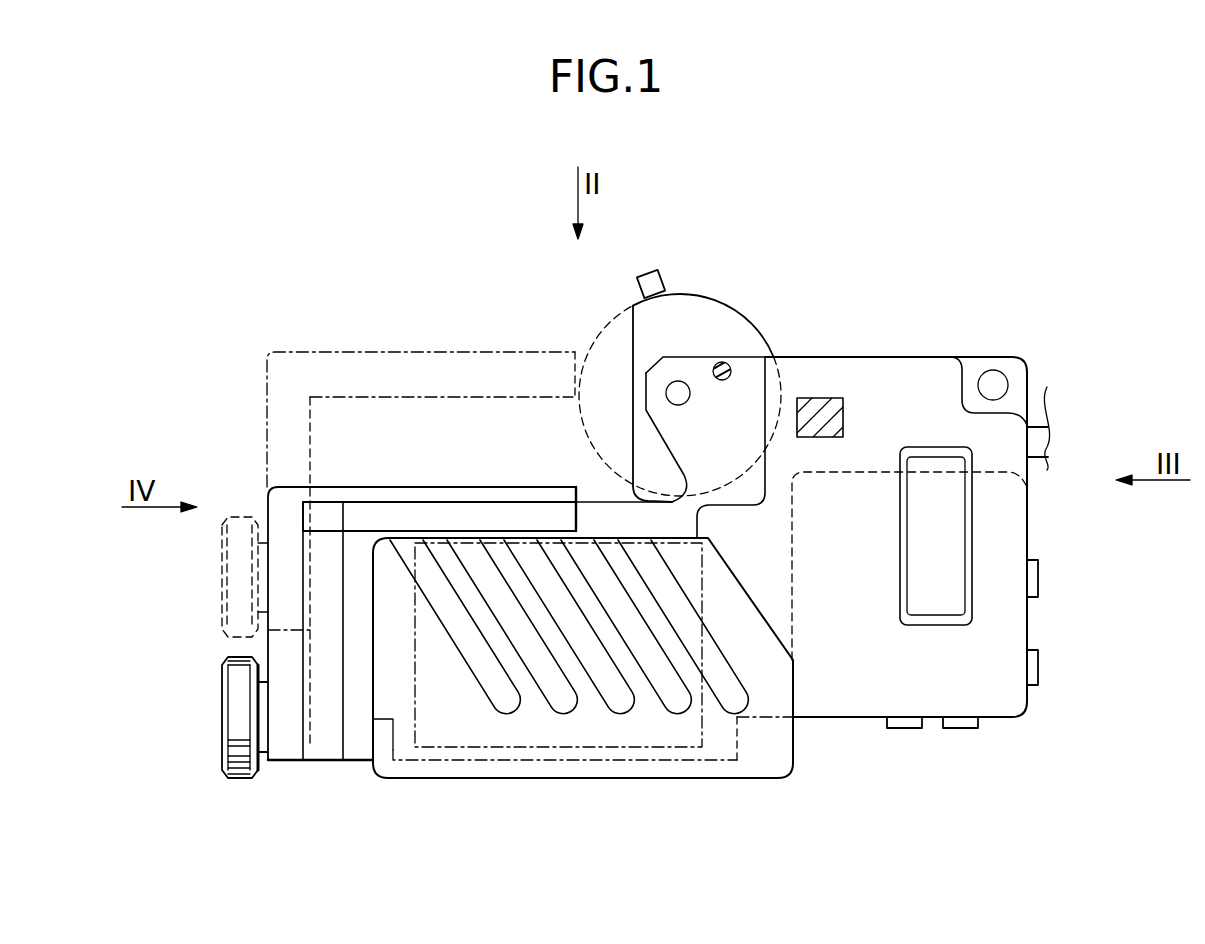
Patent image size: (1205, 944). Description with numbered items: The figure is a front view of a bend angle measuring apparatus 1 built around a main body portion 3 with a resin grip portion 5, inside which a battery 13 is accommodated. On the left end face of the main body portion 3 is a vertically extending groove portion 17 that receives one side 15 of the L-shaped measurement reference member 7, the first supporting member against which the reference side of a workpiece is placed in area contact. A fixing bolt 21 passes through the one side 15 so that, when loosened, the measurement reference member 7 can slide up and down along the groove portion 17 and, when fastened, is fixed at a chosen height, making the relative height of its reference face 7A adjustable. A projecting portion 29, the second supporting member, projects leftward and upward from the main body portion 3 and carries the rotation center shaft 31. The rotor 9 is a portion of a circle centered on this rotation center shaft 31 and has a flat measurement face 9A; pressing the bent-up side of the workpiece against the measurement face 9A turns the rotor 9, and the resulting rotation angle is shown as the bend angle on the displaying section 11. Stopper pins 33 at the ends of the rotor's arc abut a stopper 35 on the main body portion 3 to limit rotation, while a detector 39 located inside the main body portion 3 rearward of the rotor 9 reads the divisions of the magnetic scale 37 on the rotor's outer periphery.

The bend angle measuring apparatus 1 is at (943, 231).
The main body portion 3 is at (865, 685).
The grip portion 5 is at (527, 755).
The measurement reference member 7 is at (367, 490).
The reference face 7A is at (527, 493).
The rotor 9 is at (725, 317).
The measurement face 9A is at (633, 352).
The displaying section 11 is at (973, 530).
The battery 13 is at (630, 727).
The one side 15 is at (289, 748).
The groove portion 17 is at (312, 748).
The fixing bolt 21 is at (218, 606).
The projecting portion 29 is at (676, 366).
The rotation center shaft 31 is at (688, 400).
The stopper pin 33 is at (663, 280).
The stopper 35 is at (727, 380).
The magnetic scale 37 is at (772, 343).
The detector 39 is at (845, 414).